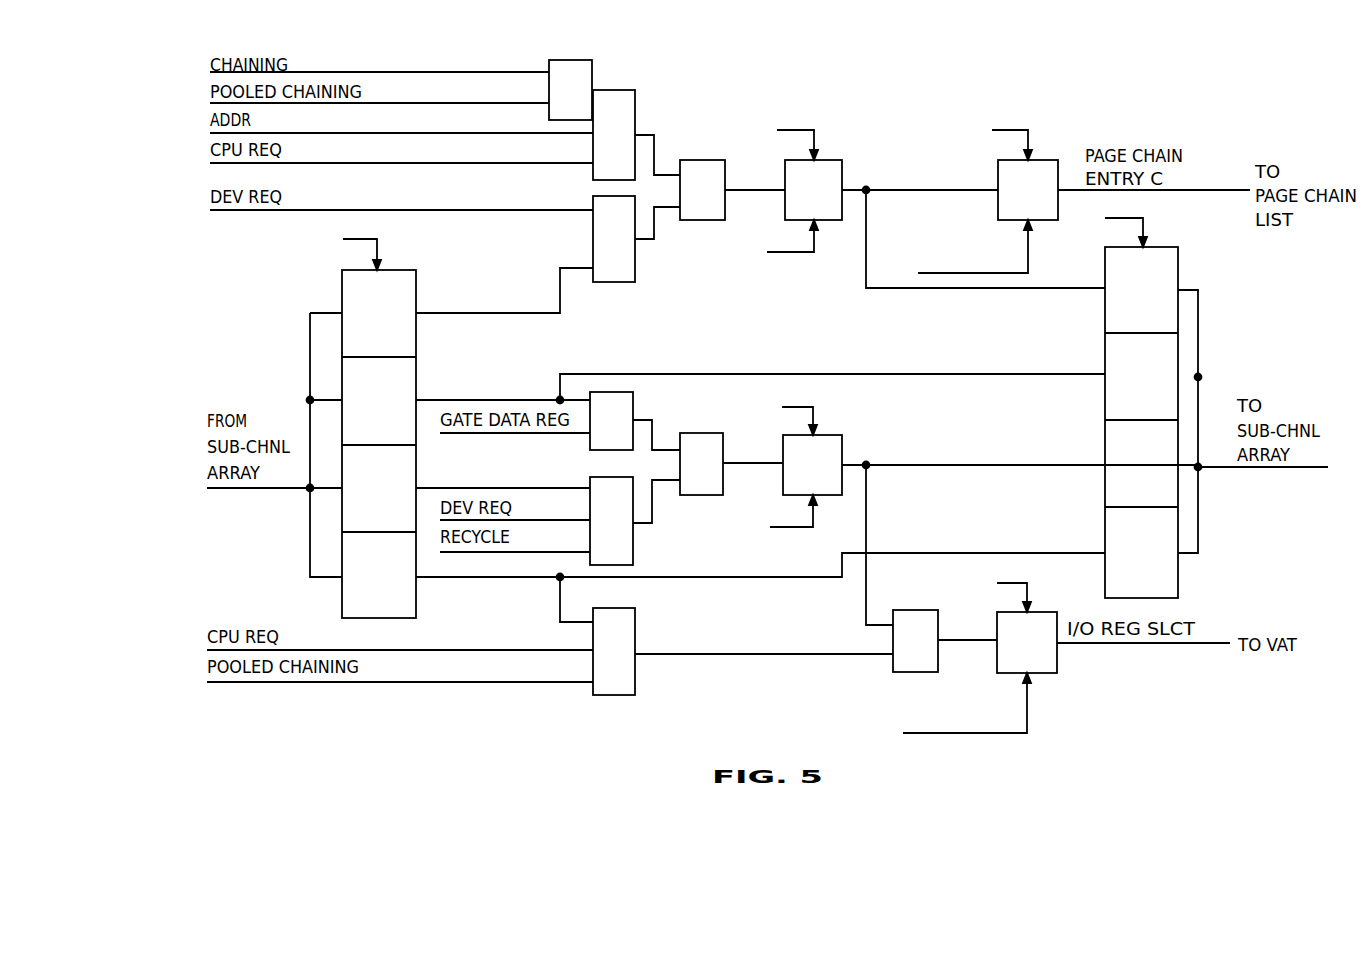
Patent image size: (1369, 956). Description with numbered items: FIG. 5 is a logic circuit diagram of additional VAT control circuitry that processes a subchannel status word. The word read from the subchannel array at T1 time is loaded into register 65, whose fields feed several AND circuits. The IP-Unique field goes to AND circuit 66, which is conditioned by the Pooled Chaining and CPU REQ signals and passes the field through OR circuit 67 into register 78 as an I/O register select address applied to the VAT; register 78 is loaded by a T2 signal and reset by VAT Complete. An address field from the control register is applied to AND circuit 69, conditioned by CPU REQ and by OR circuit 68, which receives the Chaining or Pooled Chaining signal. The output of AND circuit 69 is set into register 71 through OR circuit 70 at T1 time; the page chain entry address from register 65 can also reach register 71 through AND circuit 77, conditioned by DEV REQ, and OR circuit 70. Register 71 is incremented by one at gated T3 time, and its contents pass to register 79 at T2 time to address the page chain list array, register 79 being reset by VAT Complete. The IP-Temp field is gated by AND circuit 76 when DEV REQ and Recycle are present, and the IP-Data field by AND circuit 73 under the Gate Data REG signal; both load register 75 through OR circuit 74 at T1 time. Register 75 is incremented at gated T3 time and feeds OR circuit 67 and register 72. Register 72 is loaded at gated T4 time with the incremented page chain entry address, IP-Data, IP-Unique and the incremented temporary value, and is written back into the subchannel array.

The register 65 is at (428, 282).
The AND circuit 66 is at (622, 677).
The OR circuit 67 is at (922, 665).
The OR circuit 68 is at (579, 112).
The AND circuit 69 is at (622, 158).
The OR circuit 70 is at (710, 214).
The register 71 is at (843, 178).
The register 72 is at (1190, 268).
The AND circuit 73 is at (620, 446).
The OR circuit 74 is at (709, 487).
The register 75 is at (843, 452).
The AND circuit 76 is at (620, 546).
The AND circuit 77 is at (622, 261).
The register 78 is at (1057, 657).
The register 79 is at (998, 178).